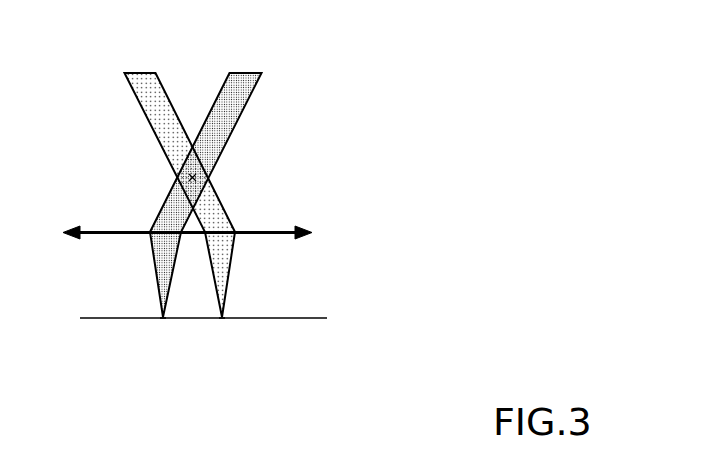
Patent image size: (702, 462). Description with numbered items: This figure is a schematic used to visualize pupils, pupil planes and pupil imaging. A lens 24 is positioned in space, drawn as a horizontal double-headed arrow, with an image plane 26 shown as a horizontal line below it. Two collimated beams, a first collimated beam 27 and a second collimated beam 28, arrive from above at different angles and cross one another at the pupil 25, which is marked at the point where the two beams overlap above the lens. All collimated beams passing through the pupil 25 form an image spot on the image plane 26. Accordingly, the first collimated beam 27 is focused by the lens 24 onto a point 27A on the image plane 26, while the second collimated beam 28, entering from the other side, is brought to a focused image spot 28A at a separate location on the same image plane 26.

The lens 24 is at (316, 233).
The pupil 25 is at (209, 179).
The image plane 26 is at (328, 320).
The collimated beam 27 is at (236, 123).
The collimated beam 28 is at (141, 108).
The point 27A is at (163, 320).
The focused image spot 28A is at (223, 320).